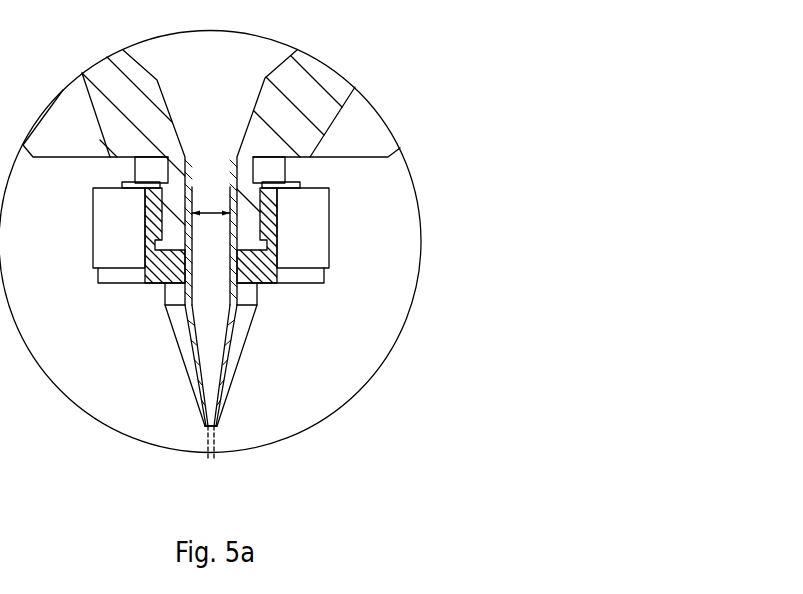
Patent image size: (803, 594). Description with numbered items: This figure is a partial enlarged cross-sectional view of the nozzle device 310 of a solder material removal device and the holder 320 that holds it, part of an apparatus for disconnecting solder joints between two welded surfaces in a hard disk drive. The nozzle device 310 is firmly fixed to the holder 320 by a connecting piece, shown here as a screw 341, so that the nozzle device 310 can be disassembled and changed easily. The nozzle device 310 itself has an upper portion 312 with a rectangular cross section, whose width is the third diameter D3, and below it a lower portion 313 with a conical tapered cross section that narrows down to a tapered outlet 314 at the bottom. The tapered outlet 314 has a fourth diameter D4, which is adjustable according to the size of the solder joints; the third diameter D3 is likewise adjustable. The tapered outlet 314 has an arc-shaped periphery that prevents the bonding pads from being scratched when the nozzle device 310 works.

The holder 320 is at (297, 107).
The upper portion 312 is at (213, 242).
The screw 341 is at (267, 267).
The nozzle device 310 is at (268, 318).
The lower portion 313 is at (208, 350).
The tapered outlet 314 is at (217, 428).
The third diameter D3 is at (211, 200).
The fourth diameter D4 is at (209, 466).